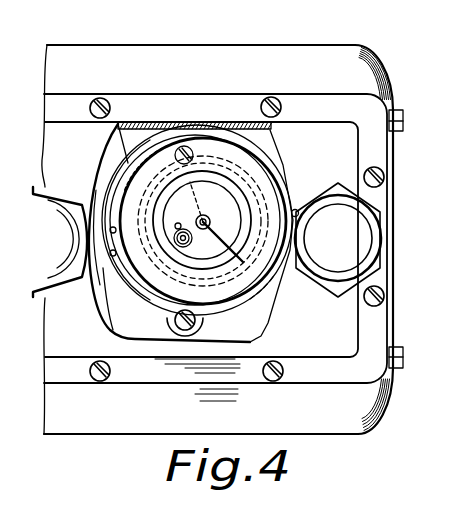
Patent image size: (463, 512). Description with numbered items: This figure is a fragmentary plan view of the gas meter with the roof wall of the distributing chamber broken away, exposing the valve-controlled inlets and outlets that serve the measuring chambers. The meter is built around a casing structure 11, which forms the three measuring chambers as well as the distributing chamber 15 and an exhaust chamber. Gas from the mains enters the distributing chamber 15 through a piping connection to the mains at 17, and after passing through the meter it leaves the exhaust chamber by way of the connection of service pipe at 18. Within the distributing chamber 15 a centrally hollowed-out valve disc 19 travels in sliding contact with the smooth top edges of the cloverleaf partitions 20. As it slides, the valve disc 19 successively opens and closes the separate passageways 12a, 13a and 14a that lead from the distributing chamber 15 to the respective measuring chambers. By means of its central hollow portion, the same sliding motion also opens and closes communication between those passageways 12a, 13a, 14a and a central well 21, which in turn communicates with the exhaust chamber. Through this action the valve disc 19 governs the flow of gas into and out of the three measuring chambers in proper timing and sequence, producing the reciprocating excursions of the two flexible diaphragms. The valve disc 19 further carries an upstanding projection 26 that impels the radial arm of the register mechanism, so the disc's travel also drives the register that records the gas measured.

The casing structure 11 is at (50, 60).
The passageway 12a is at (250, 300).
The passageway 13a is at (117, 252).
The passageway 14a is at (203, 220).
The distributing chamber 15 is at (272, 187).
The piping connection to the mains 17 is at (58, 267).
The connection of service pipe 18 is at (334, 198).
The valve disc 19 is at (276, 188).
The cloverleaf partitions 20 is at (105, 205).
The central well 21 is at (203, 220).
The upstanding projection 26 is at (243, 264).